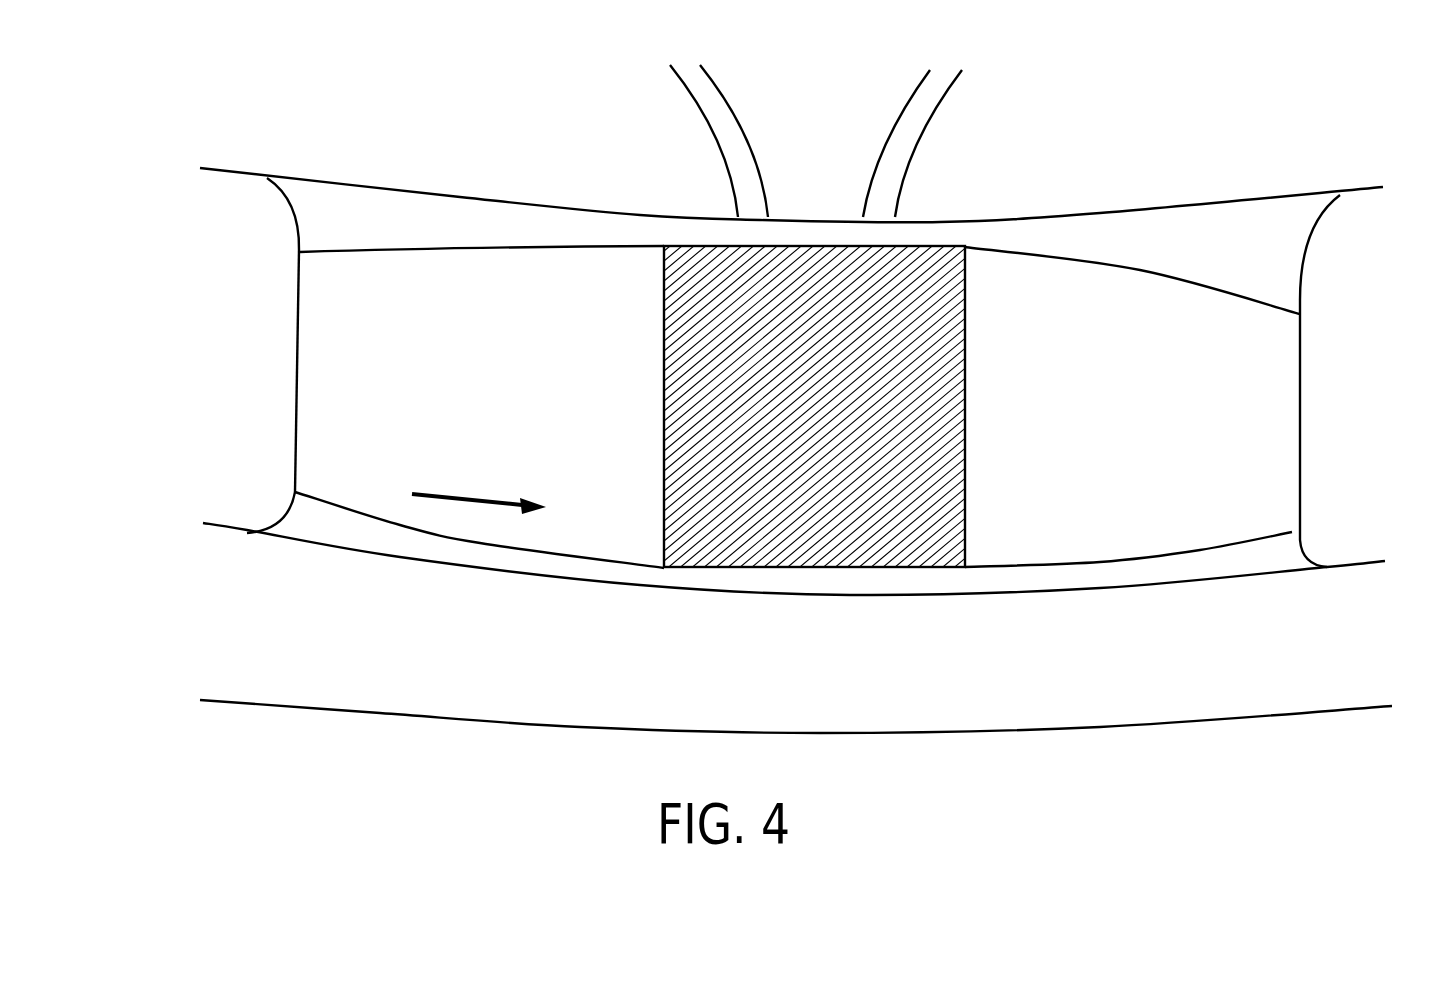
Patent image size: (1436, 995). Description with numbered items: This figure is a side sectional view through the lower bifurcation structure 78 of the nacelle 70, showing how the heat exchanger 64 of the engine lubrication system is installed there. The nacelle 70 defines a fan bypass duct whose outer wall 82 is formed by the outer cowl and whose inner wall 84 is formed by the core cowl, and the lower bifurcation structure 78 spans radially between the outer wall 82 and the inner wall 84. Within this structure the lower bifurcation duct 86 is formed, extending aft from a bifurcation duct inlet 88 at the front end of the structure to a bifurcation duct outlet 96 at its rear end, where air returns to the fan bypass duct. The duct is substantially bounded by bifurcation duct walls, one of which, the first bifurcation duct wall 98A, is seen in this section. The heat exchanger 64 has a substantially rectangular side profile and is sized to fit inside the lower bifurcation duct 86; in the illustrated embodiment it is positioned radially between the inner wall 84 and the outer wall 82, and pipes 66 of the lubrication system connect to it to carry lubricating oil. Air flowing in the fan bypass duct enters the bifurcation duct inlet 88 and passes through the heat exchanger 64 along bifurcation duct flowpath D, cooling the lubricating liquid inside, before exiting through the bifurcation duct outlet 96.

The heat exchanger 64 is at (840, 567).
The pipes 66 is at (890, 128).
The nacelle 70 is at (528, 776).
The lower bifurcation structure 78 is at (296, 434).
The outer wall 82 is at (218, 527).
The inner wall 84 is at (218, 170).
The lower bifurcation duct 86 is at (334, 346).
The bifurcation duct inlet 88 is at (300, 298).
The bifurcation duct outlet 96 is at (1300, 342).
The first bifurcation duct wall 98A is at (521, 349).
The bifurcation duct flowpath D is at (447, 492).